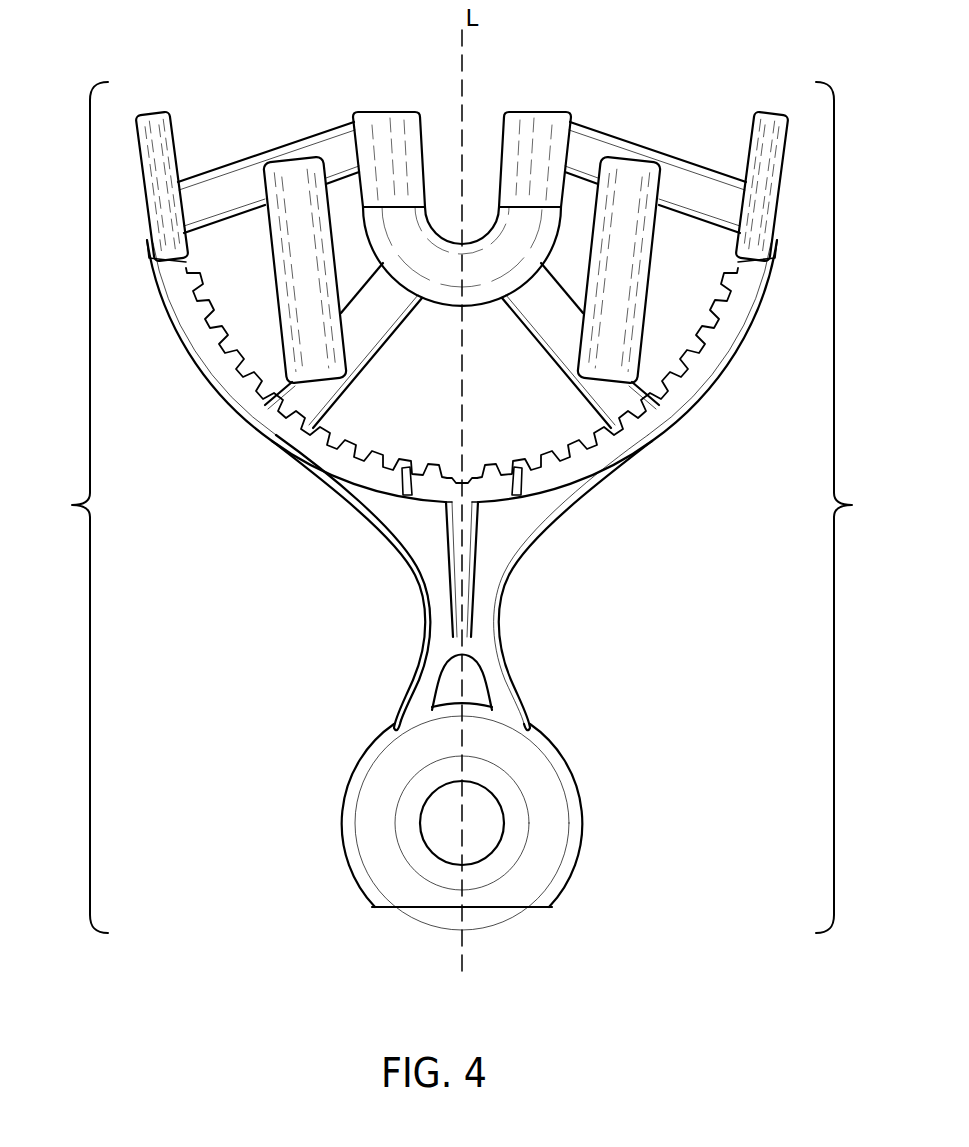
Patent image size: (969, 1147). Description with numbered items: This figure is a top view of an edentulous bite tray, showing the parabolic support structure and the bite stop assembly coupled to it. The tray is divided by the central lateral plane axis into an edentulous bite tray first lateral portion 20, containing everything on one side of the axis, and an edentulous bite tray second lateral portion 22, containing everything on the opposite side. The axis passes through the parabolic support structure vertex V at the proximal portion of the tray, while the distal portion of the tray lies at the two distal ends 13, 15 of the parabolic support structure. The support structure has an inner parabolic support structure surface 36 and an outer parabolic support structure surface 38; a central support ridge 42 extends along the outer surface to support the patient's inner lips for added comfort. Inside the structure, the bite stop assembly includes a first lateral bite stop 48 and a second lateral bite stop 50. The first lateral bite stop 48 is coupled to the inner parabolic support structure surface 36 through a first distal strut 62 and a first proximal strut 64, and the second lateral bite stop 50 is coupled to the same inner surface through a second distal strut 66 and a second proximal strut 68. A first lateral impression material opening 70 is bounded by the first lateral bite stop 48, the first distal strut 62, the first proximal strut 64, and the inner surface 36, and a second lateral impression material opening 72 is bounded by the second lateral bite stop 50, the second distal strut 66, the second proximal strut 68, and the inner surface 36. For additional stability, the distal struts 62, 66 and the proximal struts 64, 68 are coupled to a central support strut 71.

The distal end of the parabolic support structure 13 is at (153, 110).
The distal end of the parabolic support structure 15 is at (766, 154).
The edentulous bite tray first lateral portion 20 is at (71, 507).
The edentulous bite tray second lateral portion 22 is at (852, 507).
The inner parabolic support structure surface 36 is at (372, 452).
The outer parabolic support structure surface 38 is at (650, 470).
The central support ridge 42 is at (242, 440).
The first lateral bite stop 48 is at (268, 237).
The second lateral bite stop 50 is at (646, 269).
The first distal strut 62 is at (264, 150).
The first proximal strut 64 is at (375, 358).
The second distal strut 66 is at (655, 159).
The second proximal strut 68 is at (570, 387).
The first lateral impression material opening 70 is at (218, 309).
The central support strut 71 is at (474, 308).
The second lateral impression material opening 72 is at (678, 309).
The parabolic support structure vertex V is at (477, 502).